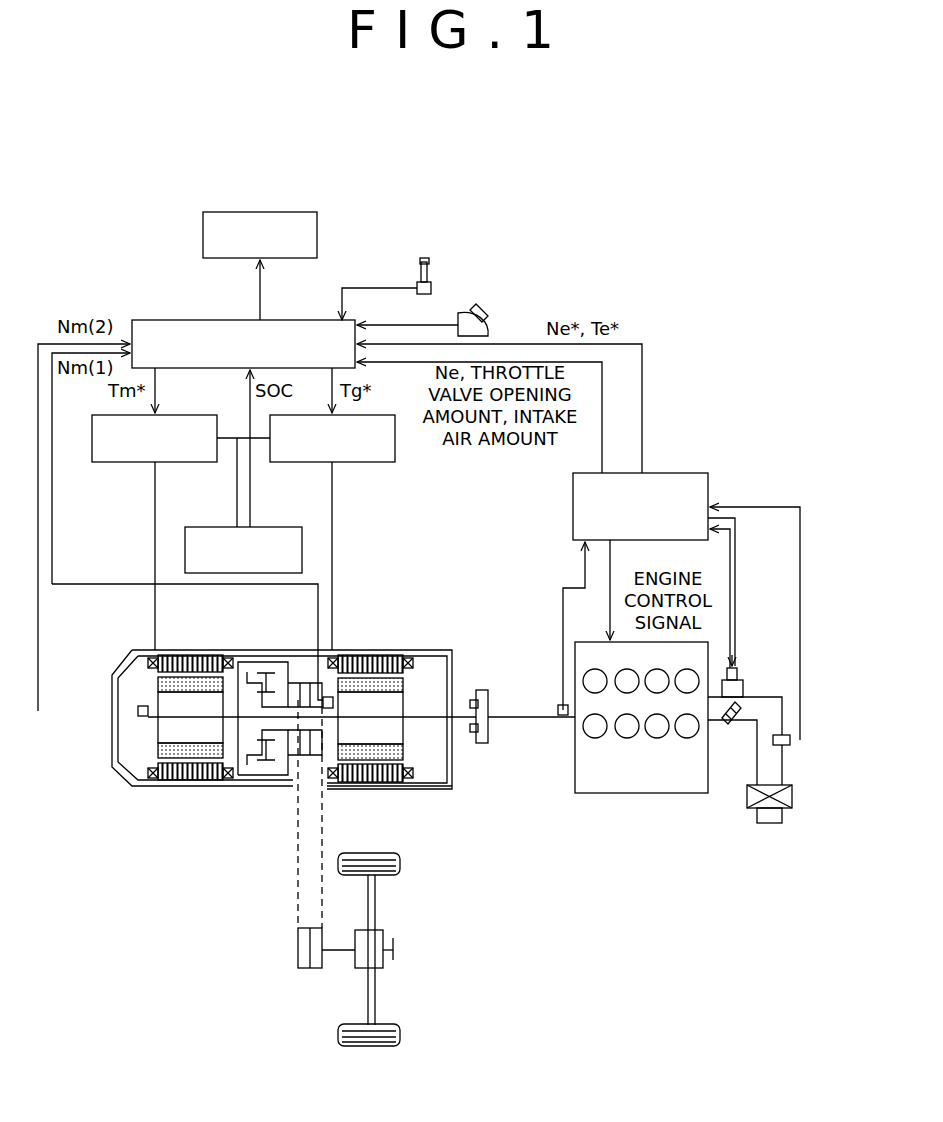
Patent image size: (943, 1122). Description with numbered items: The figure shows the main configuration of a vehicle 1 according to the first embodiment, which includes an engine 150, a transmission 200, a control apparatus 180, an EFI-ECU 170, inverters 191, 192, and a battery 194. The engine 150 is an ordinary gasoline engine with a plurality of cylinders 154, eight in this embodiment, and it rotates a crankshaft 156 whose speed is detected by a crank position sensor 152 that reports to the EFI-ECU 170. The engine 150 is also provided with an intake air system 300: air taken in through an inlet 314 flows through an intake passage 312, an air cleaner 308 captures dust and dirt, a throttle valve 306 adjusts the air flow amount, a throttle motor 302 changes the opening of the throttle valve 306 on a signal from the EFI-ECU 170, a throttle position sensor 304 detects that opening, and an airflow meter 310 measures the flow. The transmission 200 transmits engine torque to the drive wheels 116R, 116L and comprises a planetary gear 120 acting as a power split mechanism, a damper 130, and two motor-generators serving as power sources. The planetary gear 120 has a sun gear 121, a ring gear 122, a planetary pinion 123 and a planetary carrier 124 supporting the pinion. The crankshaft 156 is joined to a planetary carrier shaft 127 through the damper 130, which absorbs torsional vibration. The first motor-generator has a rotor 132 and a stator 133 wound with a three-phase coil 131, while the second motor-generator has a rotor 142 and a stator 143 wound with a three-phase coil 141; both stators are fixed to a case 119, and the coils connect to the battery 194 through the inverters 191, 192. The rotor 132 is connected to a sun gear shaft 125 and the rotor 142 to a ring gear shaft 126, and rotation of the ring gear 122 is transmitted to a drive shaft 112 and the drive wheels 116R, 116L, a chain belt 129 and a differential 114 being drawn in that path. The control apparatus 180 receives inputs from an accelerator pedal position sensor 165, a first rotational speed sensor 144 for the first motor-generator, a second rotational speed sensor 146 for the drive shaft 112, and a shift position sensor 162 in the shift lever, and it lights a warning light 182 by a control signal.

The vehicle 1 is at (149, 181).
The drive shaft 112 is at (377, 900).
The differential gear 114 is at (385, 935).
The drive wheel 116R is at (400, 865).
The drive wheel 116L is at (400, 1033).
The case 119 is at (150, 789).
The planetary gear 120 is at (278, 640).
The sun gear 121 is at (292, 700).
The ring gear 122 is at (286, 670).
The planetary pinion 123 is at (258, 668).
The planetary carrier 124 is at (248, 690).
The sun gear shaft 125 is at (297, 792).
The ring gear shaft 126 is at (175, 718).
The planetary carrier shaft 127 is at (433, 789).
The chain belt 129 is at (296, 905).
The damper 130 is at (482, 743).
The three-phase coil 131 is at (415, 680).
The rotor 132 is at (410, 700).
The stator 133 is at (395, 660).
The three-phase coil 141 is at (141, 706).
The rotor 142 is at (157, 745).
The stator 143 is at (172, 653).
The first rotational speed sensor 144 is at (335, 703).
The second rotational speed sensor 146 is at (112, 688).
The engine 150 is at (595, 642).
The crank position sensor 152 is at (558, 710).
The cylinder 154 is at (592, 738).
The crankshaft 156 is at (550, 720).
The shift position sensor 162 is at (431, 286).
The accelerator pedal position sensor 165 is at (488, 336).
The EFI-ECU 170 is at (685, 473).
The control apparatus 180 is at (158, 320).
The warning light 182 is at (317, 232).
The inverter 191 is at (395, 440).
The inverter 192 is at (192, 415).
The battery 194 is at (278, 527).
The transmission 200 is at (291, 731).
The intake air system 300 is at (761, 626).
The throttle motor 302 is at (743, 690).
The throttle position sensor 304 is at (739, 668).
The throttle valve 306 is at (733, 722).
The air cleaner 308 is at (765, 800).
The airflow meter 310 is at (790, 742).
The intake passage 312 is at (755, 800).
The inlet 314 is at (770, 823).